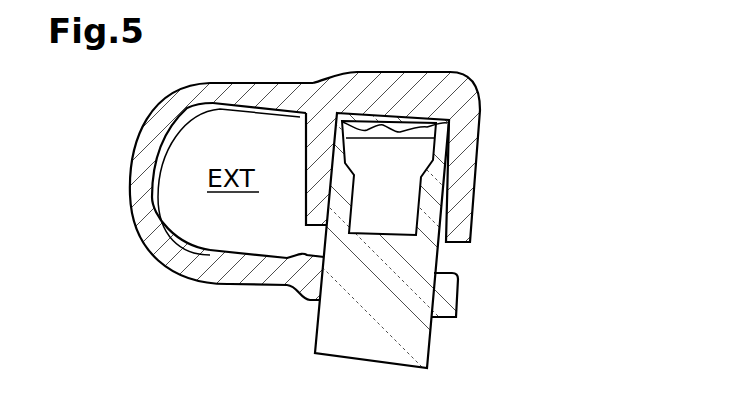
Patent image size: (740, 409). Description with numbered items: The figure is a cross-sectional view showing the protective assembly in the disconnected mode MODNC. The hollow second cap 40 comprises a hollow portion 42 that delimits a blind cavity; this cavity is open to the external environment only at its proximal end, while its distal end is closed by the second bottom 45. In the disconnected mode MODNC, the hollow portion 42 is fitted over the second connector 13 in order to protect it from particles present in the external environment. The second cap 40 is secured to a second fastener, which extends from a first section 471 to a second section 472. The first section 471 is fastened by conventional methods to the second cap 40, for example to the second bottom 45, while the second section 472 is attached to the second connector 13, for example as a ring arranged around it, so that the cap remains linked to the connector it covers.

The second cap 40 is at (106, 204).
The hollow portion 42 is at (463, 192).
The second bottom 45 is at (407, 73).
The first section 471 is at (309, 82).
The second section 472 is at (311, 282).
The second connector 13 is at (403, 338).
The disconnected mode MODNC is at (528, 136).